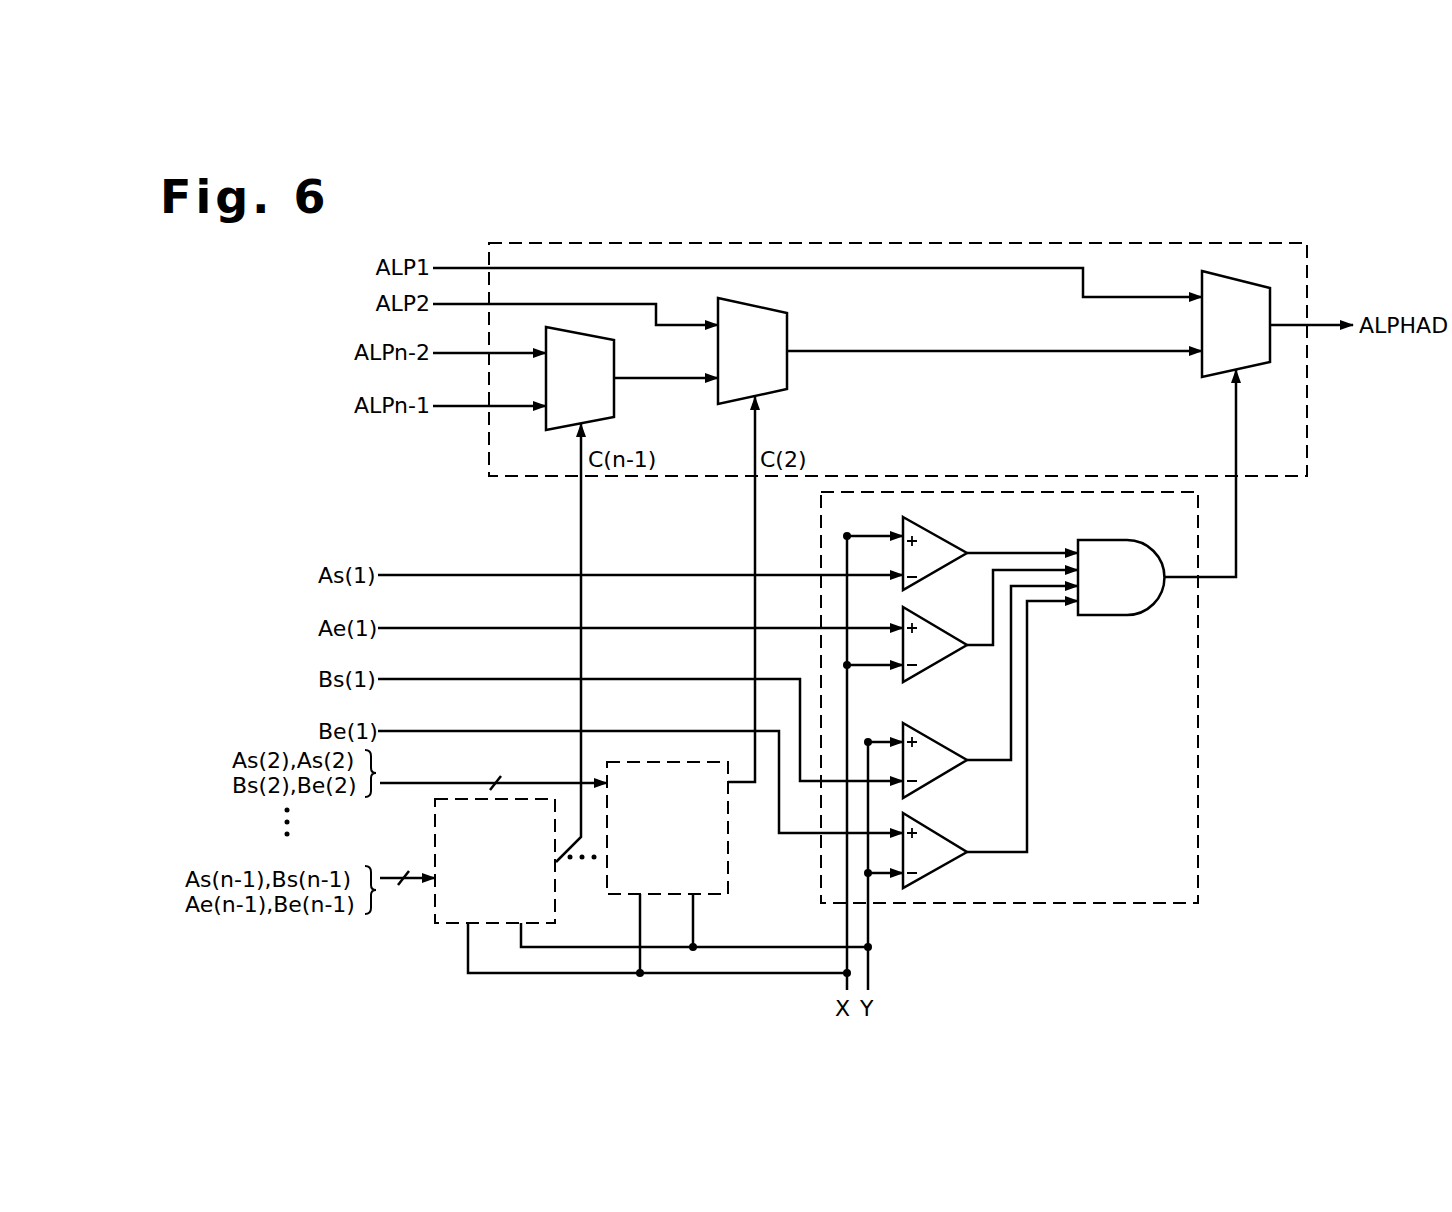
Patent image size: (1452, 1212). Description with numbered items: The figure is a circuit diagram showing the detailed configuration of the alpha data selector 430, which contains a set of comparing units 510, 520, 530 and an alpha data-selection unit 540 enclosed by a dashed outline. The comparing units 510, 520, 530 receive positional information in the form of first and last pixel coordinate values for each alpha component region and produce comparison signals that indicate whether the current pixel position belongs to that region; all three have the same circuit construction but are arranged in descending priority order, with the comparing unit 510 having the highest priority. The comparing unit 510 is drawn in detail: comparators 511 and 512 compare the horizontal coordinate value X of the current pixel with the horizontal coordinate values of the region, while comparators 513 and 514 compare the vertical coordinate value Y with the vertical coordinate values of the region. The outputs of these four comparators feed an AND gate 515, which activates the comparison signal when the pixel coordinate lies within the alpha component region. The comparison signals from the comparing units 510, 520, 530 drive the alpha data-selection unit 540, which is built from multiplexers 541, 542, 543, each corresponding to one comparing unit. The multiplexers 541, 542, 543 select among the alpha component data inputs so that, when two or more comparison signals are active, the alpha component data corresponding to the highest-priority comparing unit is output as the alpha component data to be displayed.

The alpha data selector 430 is at (1320, 226).
The comparing unit 510 is at (1101, 892).
The comparator 511 is at (925, 527).
The comparator 512 is at (925, 617).
The comparator 513 is at (925, 734).
The comparator 514 is at (925, 824).
The AND gate 515 is at (1105, 615).
The comparing unit 520 is at (648, 884).
The comparing unit 530 is at (476, 916).
The alpha data-selection unit 540 is at (1280, 476).
The multiplexer 541 is at (1202, 371).
The multiplexer 542 is at (787, 370).
The multiplexer 543 is at (614, 410).